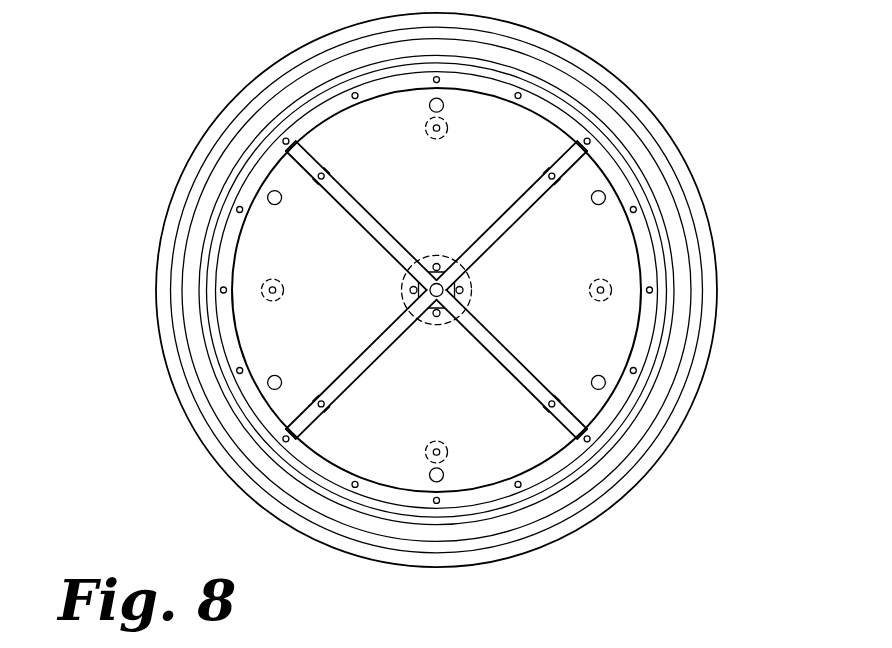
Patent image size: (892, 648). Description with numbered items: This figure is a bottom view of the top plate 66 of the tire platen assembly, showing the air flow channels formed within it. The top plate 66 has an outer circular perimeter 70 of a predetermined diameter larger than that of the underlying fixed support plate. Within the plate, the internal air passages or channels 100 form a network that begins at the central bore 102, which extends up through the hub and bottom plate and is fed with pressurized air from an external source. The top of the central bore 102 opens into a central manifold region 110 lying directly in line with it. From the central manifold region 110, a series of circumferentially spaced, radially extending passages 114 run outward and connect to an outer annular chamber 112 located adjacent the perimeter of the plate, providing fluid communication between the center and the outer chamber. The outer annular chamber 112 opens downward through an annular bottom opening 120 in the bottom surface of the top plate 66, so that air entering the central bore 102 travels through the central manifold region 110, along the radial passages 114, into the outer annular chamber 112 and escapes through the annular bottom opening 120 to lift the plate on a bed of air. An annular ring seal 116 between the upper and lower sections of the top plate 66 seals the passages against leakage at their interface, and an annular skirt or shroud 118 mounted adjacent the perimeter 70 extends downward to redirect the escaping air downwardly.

The top plate 66 is at (682, 119).
The outer circular perimeter 70 is at (718, 309).
The internal air passages or channels 100 is at (436, 290).
The central bore 102 is at (443, 294).
The central manifold region 110 is at (457, 278).
The outer annular chamber 112 is at (630, 189).
The radially extending passages 114 is at (480, 241).
The annular ring seal 116 is at (585, 471).
The annular skirt or shroud 118 is at (705, 207).
The annular bottom opening 120 is at (542, 477).